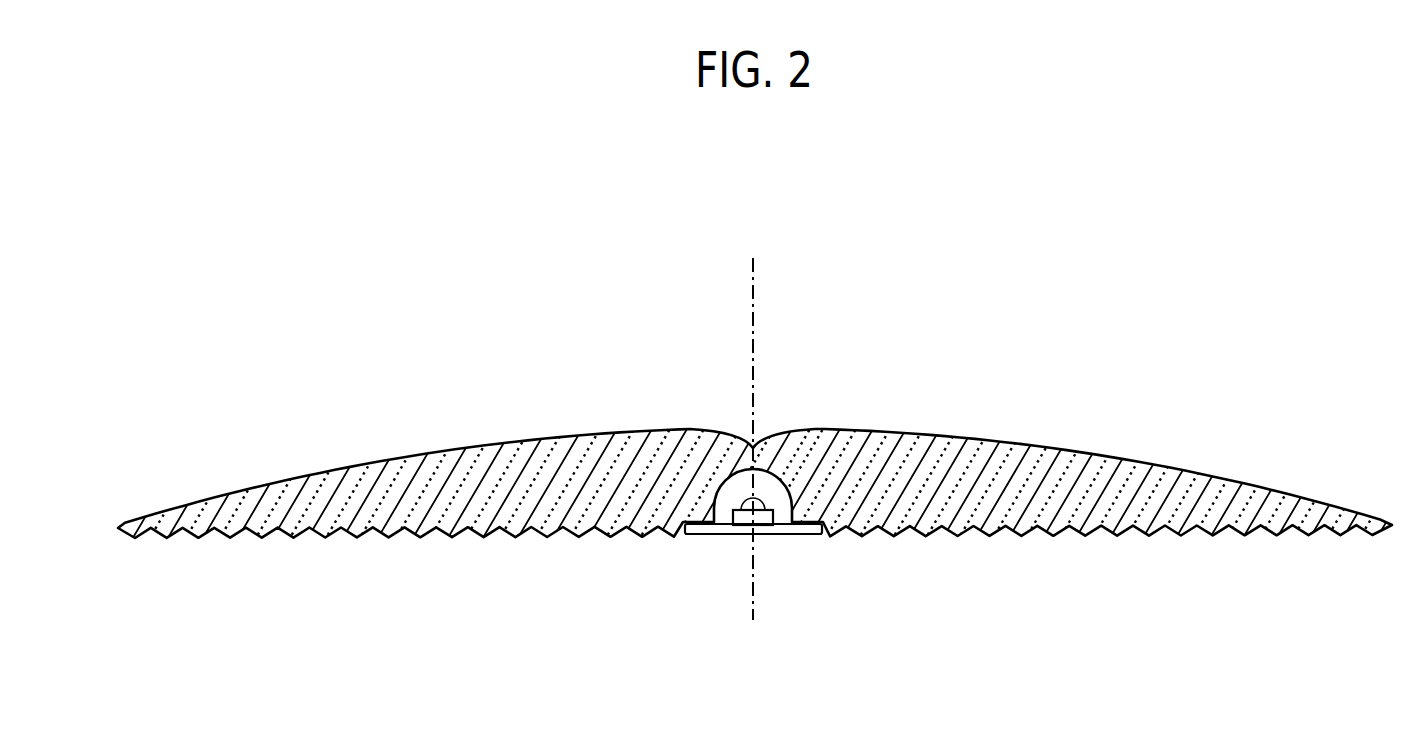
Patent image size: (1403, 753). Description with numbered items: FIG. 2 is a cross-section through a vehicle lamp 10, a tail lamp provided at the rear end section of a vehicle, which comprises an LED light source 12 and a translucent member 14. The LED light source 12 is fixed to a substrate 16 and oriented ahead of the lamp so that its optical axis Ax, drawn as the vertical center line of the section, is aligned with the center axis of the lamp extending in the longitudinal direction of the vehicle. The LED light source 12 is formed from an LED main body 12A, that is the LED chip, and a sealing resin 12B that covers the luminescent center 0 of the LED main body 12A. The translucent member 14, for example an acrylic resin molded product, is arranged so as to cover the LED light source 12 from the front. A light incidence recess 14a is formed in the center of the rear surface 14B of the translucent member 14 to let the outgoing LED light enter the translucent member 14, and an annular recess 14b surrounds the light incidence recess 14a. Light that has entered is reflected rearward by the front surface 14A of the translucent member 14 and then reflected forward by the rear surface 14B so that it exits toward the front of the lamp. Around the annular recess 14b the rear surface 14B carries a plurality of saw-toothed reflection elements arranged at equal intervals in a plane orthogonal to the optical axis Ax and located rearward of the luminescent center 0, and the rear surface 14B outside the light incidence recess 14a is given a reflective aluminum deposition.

The vehicle lamp 10 is at (1190, 167).
The LED light source 12 is at (761, 520).
The LED main body 12A is at (745, 525).
The sealing resin 12B is at (722, 502).
The translucent member 14 is at (1069, 419).
The front surface 14A is at (519, 439).
The rear surface 14B is at (476, 540).
The light incidence recess 14a is at (760, 481).
The annular recess 14b is at (813, 537).
The substrate 16 is at (793, 548).
The luminescent center 0 is at (765, 535).
The optical axis Ax is at (754, 305).